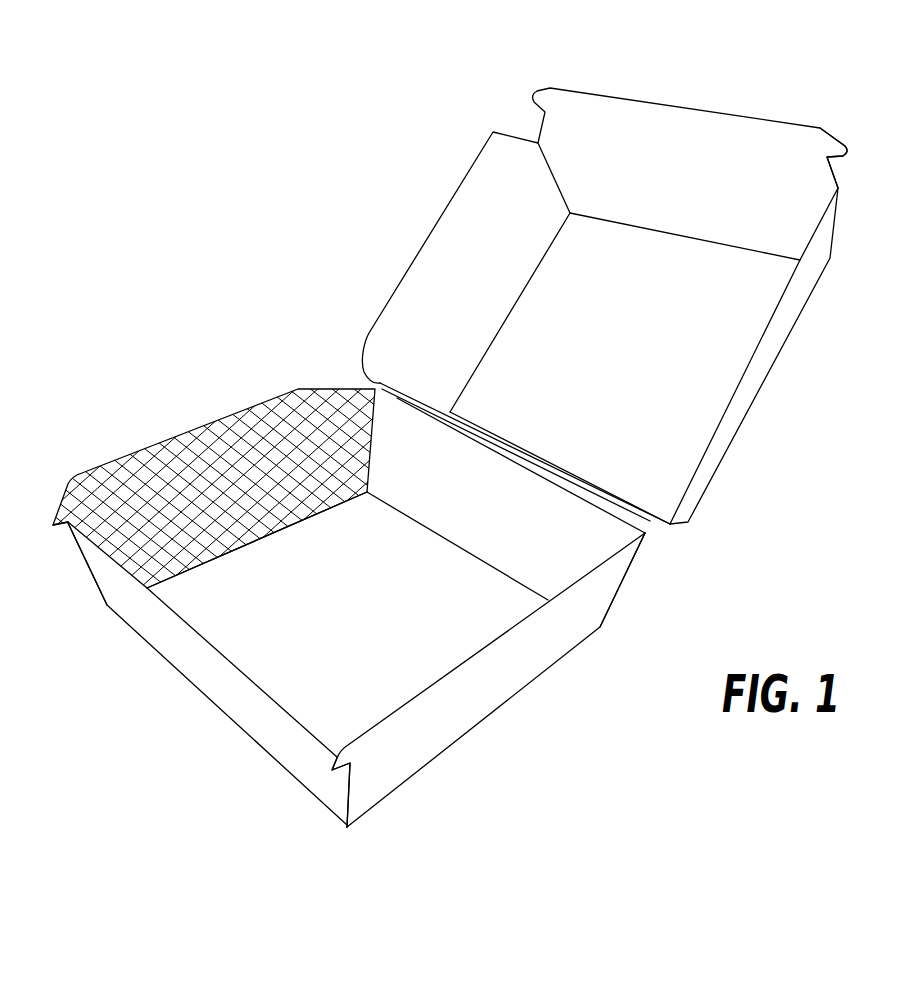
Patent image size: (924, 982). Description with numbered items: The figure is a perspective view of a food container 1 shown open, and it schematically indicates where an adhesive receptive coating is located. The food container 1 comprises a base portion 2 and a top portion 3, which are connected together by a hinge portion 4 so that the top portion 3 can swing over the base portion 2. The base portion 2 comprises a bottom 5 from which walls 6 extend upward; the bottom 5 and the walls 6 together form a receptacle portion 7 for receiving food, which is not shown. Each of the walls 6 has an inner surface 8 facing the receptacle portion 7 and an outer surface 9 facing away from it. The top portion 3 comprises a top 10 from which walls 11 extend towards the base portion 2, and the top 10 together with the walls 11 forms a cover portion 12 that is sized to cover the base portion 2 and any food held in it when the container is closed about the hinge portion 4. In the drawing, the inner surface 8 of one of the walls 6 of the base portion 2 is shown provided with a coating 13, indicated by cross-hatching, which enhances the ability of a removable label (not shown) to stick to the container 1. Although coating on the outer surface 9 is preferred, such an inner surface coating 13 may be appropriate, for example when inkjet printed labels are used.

The food container 1 is at (256, 208).
The base portion 2 is at (197, 412).
The top portion 3 is at (785, 445).
The hinge portion 4 is at (633, 500).
The bottom 5 is at (402, 668).
The walls 6 is at (395, 430).
The receptacle portion 7 is at (447, 607).
The inner surface 8 is at (132, 523).
The outer surface 9 is at (405, 750).
The top 10 is at (835, 140).
The walls 11 is at (463, 178).
The cover portion 12 is at (680, 362).
The coating 13 is at (143, 483).